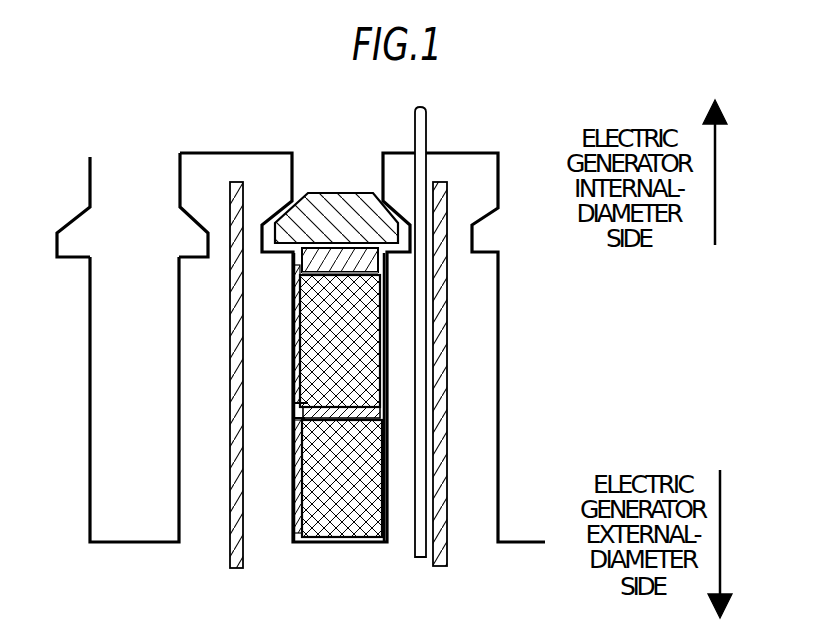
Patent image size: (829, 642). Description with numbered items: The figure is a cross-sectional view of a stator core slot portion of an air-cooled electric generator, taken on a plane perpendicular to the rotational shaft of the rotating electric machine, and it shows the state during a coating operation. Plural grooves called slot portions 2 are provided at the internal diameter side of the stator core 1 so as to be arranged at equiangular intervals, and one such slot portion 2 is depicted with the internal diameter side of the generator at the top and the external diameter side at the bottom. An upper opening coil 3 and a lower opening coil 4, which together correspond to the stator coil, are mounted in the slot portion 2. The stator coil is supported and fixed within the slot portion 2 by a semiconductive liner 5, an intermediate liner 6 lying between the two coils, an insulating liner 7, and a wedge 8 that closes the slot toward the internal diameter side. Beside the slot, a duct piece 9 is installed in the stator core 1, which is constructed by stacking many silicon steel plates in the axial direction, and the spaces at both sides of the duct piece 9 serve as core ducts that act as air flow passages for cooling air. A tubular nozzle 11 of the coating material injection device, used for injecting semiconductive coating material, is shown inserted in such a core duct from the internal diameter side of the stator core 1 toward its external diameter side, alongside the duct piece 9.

The stator core 1 is at (457, 151).
The slot portion 2 is at (140, 283).
The upper opening coil 3 is at (373, 347).
The lower opening coil 4 is at (377, 498).
The semiconductive liner 5 is at (293, 426).
The intermediate liner 6 is at (292, 420).
The insulating liner 7 is at (307, 261).
The wedge 8 is at (342, 208).
The duct piece 9 is at (440, 323).
The nozzle 11 is at (423, 413).